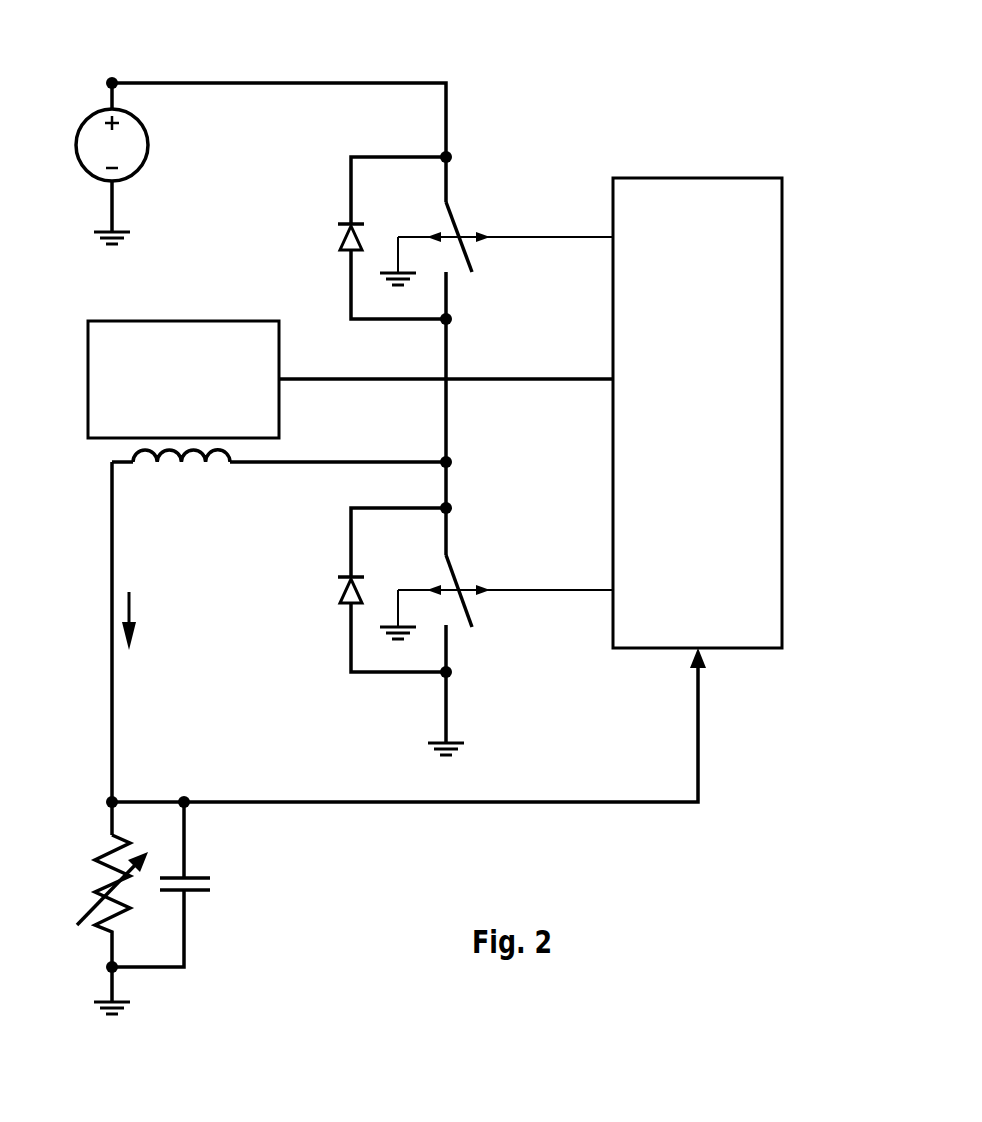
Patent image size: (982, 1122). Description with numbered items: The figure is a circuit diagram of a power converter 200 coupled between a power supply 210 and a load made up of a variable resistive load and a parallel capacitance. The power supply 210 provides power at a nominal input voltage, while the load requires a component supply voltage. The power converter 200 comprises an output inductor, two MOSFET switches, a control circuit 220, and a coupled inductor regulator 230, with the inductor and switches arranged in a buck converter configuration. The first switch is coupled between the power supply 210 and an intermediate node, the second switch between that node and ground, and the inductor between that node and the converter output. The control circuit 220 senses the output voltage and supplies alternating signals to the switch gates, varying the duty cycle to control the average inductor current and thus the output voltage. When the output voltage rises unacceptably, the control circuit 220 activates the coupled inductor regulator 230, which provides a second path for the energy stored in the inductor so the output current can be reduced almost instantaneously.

The power converter 200 is at (598, 68).
The power supply 210 is at (148, 152).
The control circuit 220 is at (782, 551).
The coupled inductor regulator 230 is at (162, 321).